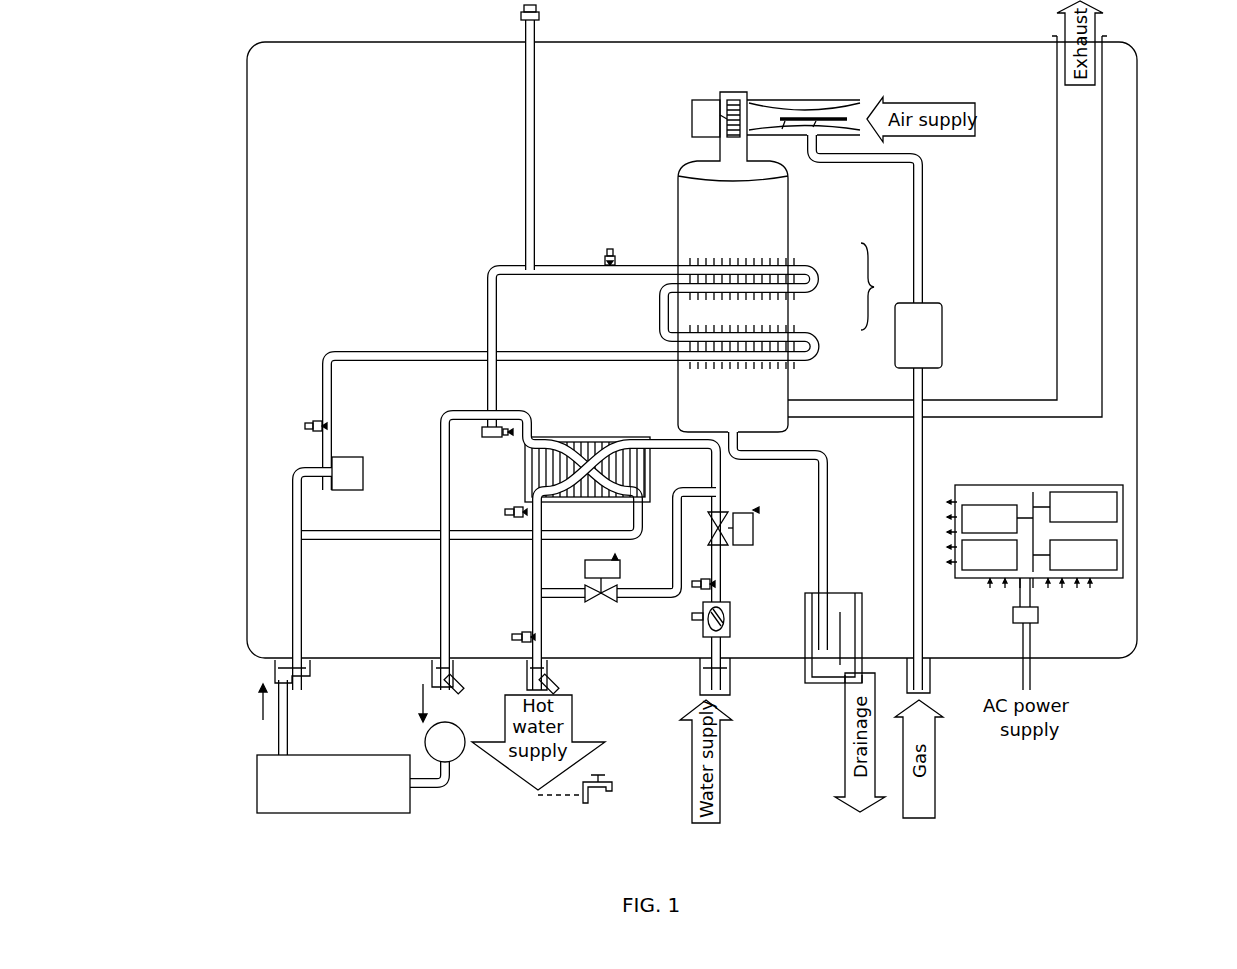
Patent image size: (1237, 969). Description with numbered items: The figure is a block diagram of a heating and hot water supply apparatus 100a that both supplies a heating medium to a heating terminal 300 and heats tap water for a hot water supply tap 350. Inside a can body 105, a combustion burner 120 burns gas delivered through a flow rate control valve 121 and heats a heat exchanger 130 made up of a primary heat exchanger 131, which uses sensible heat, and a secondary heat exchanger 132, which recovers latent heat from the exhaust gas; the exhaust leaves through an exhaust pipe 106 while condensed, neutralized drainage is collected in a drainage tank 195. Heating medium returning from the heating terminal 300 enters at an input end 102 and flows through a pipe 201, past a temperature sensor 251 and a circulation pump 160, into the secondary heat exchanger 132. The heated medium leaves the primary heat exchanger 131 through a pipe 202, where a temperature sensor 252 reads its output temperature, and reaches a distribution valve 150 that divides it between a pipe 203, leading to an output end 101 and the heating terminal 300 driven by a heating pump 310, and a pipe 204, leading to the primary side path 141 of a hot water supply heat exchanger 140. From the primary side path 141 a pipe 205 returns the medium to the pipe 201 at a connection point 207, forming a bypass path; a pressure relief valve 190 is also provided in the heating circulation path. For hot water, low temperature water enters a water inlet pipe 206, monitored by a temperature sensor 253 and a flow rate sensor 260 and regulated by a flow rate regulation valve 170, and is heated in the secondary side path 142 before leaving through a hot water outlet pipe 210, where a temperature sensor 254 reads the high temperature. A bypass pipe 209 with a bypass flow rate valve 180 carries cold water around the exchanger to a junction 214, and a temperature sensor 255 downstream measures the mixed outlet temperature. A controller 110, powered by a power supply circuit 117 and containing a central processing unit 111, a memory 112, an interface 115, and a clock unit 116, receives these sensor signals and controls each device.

The heating and hot water supply apparatus 100a is at (1138, 67).
The exhaust pipe 106 is at (1104, 200).
The pressure relief valve 190 is at (536, 30).
The combustion burner 120 is at (731, 183).
The can body 105 is at (678, 380).
The flow rate control valve 121 is at (943, 335).
The heat exchanger 130 is at (788, 290).
The primary heat exchanger 131 is at (800, 270).
The secondary heat exchanger 132 is at (800, 337).
The pipe 202 is at (560, 278).
The temperature sensor 252 is at (606, 253).
The hot water supply heat exchanger 140 is at (590, 437).
The primary side path 141 is at (610, 497).
The secondary side path 142 is at (570, 497).
The distribution valve 150 is at (491, 440).
The circulation pump 160 is at (350, 490).
The flow rate regulation valve 170 is at (755, 539).
The bypass flow rate valve 180 is at (596, 604).
The drainage tank 195 is at (848, 591).
The pipe 201 is at (292, 552).
The pipe 203 is at (440, 444).
The pipe 204 is at (527, 412).
The pipe 205 is at (479, 543).
The water inlet pipe 206 is at (725, 567).
The connection point 207 is at (305, 543).
The bypass pipe 209 is at (653, 590).
The hot water outlet pipe 210 is at (533, 598).
The junction 214 is at (552, 590).
The temperature sensor 251 is at (313, 418).
The temperature sensor 253 is at (700, 588).
The temperature sensor 254 is at (510, 514).
The temperature sensor 255 is at (512, 640).
The flow rate sensor 260 is at (740, 620).
The output end 101 is at (432, 672).
The input end 102 is at (303, 694).
The heating terminal 300 is at (257, 784).
The heating pump 310 is at (425, 742).
The hot water supply tap 350 is at (614, 785).
The controller 110 is at (1071, 538).
The central processing unit 111 is at (1117, 507).
The memory 112 is at (1117, 555).
The interface 115 is at (985, 505).
The clock unit 116 is at (980, 578).
The power supply circuit 117 is at (1040, 613).